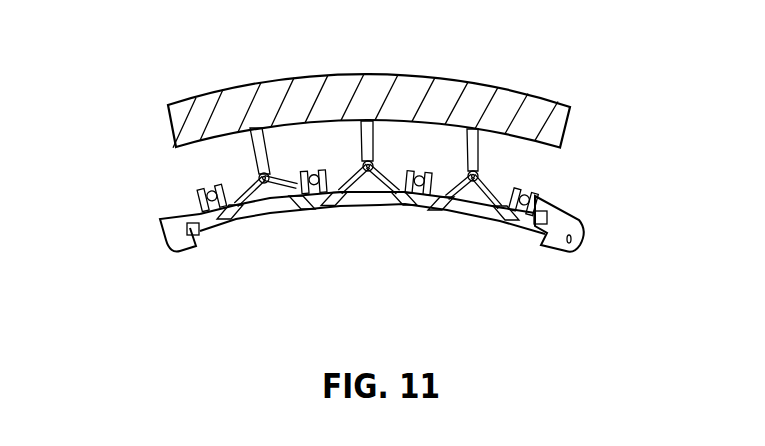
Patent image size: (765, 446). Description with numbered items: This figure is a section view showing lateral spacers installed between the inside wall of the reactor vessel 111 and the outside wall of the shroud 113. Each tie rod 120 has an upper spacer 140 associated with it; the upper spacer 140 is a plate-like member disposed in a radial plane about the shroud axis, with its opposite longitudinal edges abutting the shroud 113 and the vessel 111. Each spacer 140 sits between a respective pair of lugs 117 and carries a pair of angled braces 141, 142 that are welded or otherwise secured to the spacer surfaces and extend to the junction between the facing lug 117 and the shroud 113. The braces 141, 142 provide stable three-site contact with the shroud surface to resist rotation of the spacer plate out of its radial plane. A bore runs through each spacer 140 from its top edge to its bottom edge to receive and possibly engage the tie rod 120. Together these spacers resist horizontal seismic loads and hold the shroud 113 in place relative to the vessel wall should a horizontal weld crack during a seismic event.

The reactor vessel 111 is at (562, 108).
The shroud 113 is at (198, 222).
The lug 117 is at (312, 172).
The tie rod 120 is at (258, 176).
The upper spacer 140 is at (266, 144).
The angled brace 141 is at (255, 215).
The angled brace 142 is at (284, 196).